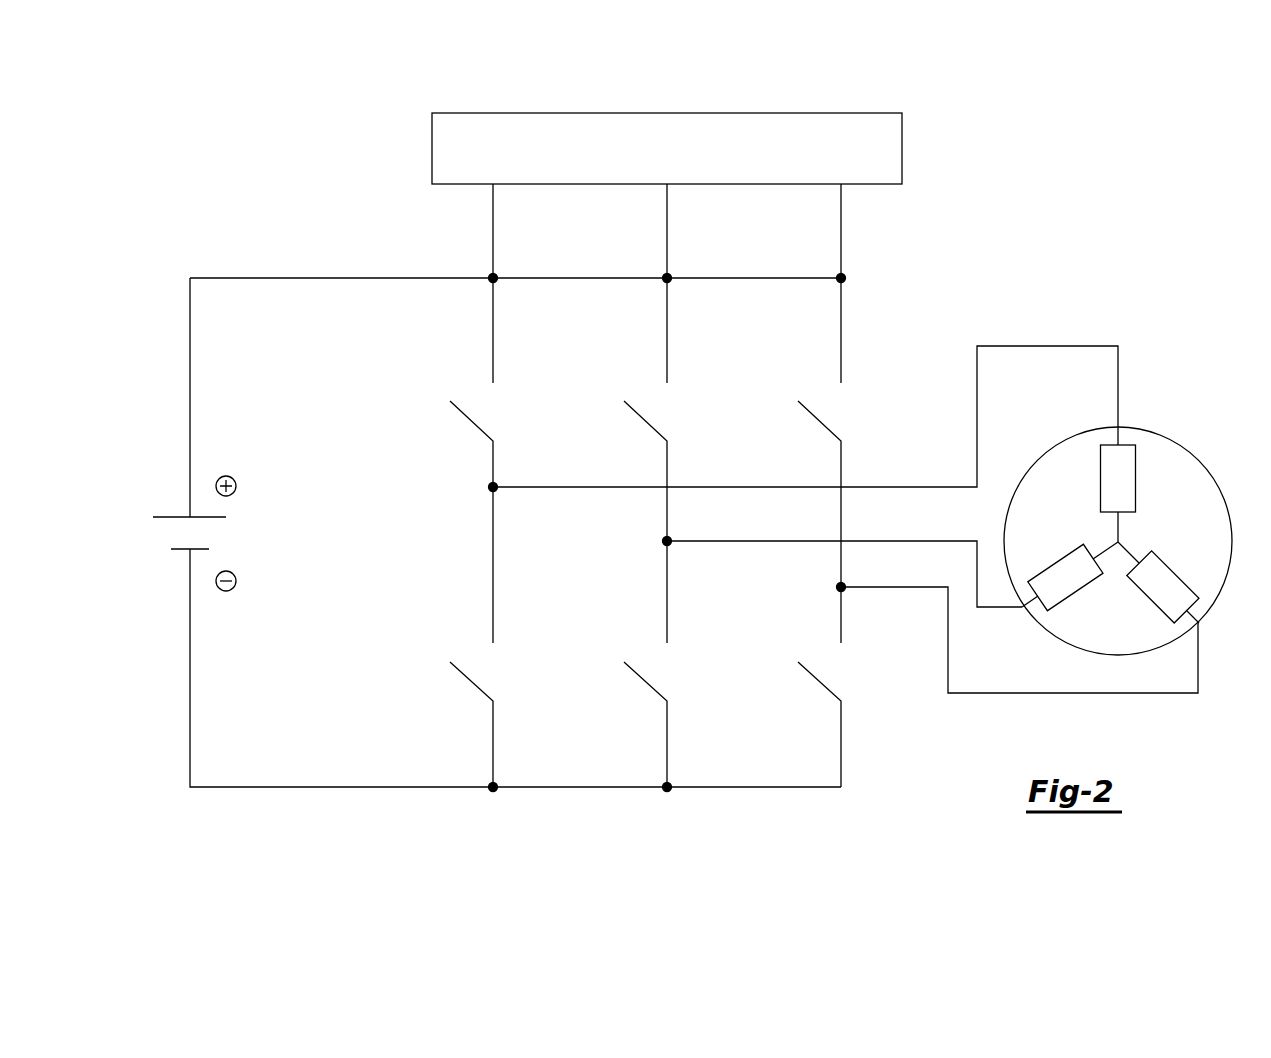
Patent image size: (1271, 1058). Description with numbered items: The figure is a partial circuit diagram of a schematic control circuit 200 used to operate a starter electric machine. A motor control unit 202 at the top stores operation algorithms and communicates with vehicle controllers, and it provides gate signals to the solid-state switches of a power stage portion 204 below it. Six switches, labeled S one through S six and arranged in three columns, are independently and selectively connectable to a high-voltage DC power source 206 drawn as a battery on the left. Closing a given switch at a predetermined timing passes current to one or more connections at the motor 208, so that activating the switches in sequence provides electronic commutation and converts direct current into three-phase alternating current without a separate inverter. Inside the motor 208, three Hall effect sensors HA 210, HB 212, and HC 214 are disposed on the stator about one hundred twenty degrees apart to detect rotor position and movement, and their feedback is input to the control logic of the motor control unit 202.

The control circuit 200 is at (288, 178).
The motor control unit 202 is at (503, 112).
The power stage portion 204 is at (265, 277).
The high-voltage DC power source 206 is at (172, 516).
The motor 208 is at (1180, 446).
The Hall effect sensor HA 210 is at (1100, 478).
The Hall effect sensor HB 212 is at (1178, 573).
The Hall effect sensor HC 214 is at (1078, 591).